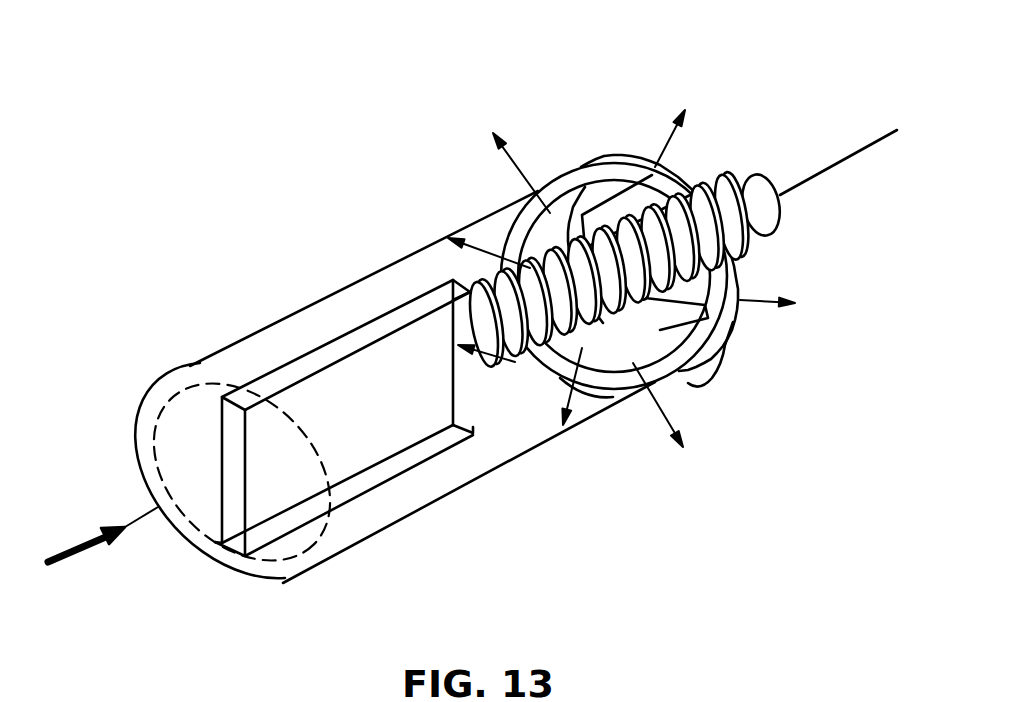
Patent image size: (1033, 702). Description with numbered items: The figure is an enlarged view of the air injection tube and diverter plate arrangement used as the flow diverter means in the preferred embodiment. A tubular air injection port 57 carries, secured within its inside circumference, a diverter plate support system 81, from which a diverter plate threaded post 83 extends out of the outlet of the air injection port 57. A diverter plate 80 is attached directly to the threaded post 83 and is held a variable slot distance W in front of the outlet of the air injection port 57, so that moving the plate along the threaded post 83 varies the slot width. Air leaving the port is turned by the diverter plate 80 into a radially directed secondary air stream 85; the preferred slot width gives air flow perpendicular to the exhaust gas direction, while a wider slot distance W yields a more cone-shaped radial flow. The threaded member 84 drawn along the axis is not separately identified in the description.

The tube / housing 57 is at (387, 347).
The ring 80 is at (565, 204).
The plate 81 is at (359, 445).
The screw head / cap 83 is at (820, 127).
The threaded screw 84 is at (577, 192).
The ring edge 85 is at (585, 405).
The wire W is at (702, 339).